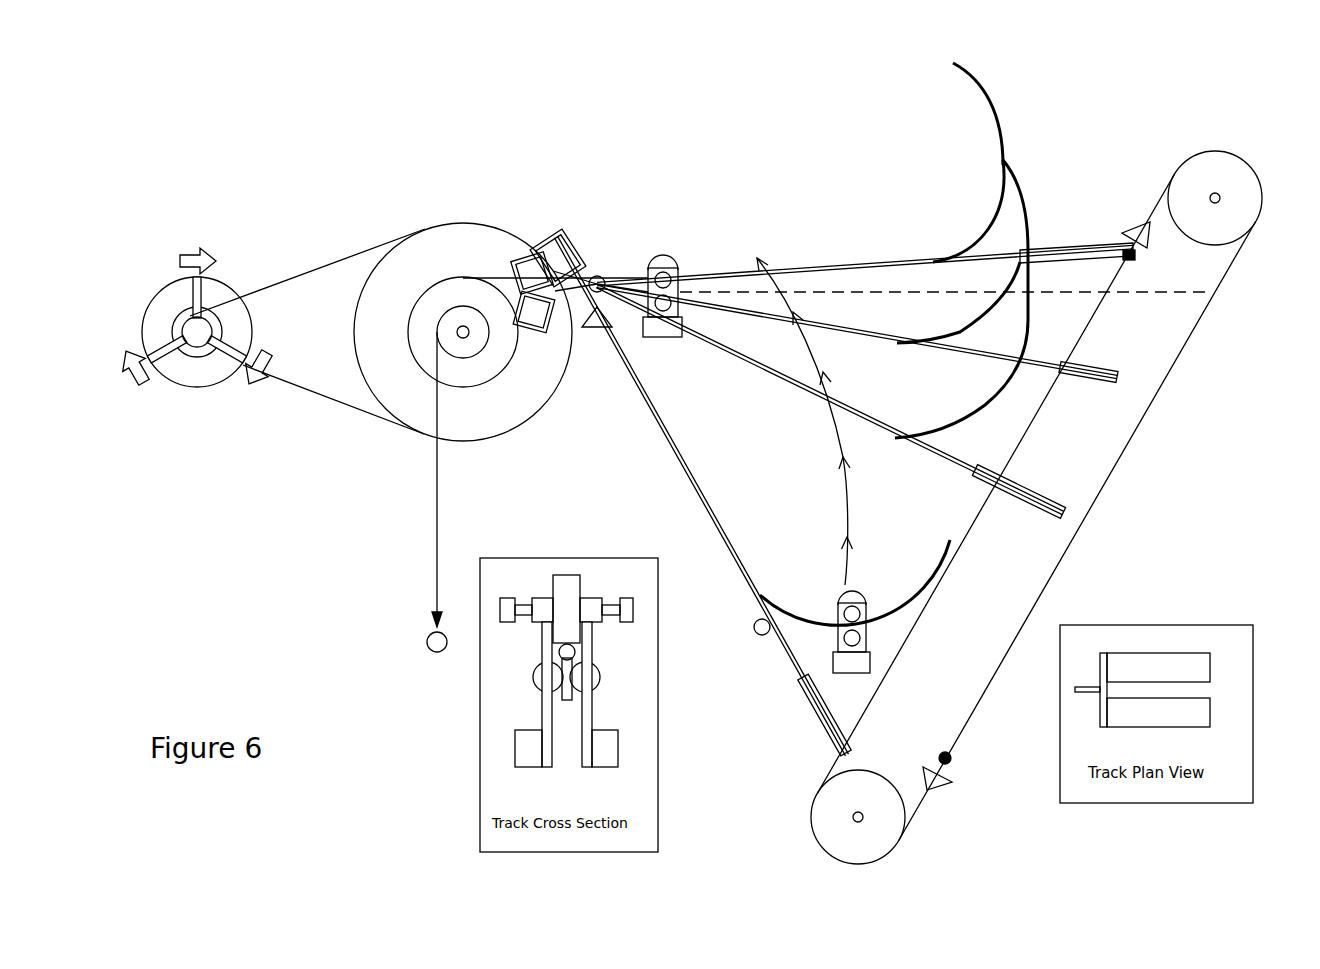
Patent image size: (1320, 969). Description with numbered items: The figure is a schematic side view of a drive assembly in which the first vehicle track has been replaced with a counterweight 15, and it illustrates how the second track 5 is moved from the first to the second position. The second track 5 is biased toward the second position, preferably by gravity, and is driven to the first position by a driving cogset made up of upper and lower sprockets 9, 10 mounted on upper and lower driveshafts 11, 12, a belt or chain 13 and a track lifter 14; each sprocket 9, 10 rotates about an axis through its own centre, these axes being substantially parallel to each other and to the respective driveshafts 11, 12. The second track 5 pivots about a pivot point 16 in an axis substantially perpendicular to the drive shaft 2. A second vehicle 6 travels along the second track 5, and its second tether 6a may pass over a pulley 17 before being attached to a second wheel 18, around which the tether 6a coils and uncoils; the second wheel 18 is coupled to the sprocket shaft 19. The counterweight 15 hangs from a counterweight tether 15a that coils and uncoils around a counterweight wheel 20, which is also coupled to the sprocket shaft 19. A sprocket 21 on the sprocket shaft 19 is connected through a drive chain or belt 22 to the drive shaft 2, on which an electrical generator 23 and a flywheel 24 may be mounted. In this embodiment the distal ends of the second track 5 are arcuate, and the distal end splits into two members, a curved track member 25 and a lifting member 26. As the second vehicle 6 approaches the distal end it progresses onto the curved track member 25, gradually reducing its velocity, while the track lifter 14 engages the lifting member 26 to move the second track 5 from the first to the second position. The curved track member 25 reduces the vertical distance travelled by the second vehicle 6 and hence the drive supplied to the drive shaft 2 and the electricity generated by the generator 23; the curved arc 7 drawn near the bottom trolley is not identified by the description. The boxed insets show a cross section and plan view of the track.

The drive shaft 2 is at (190, 325).
The second track 5 is at (705, 500).
The second vehicle 6 is at (668, 258).
The second tether 6a is at (617, 272).
The curved track section 7 is at (755, 633).
The upper sprocket 9 is at (813, 830).
The lower sprocket 10 is at (1203, 151).
The upper driveshaft 11 is at (864, 821).
The lower driveshaft 12 is at (1218, 193).
The belt or chain 13 is at (1168, 383).
The track lifter 14 is at (1135, 261).
The counterweight 15 is at (432, 651).
The counterweight tether 15a is at (437, 582).
The pivot point 16 is at (590, 328).
The pulley 17 is at (597, 276).
The second wheel 18 is at (512, 358).
The sprocket shaft 19 is at (461, 338).
The counterweight wheel 20 is at (480, 352).
The sprocket 21 is at (460, 222).
The drive chain or belt 22 is at (318, 268).
The electrical generator 23 is at (173, 308).
The flywheel 24 is at (223, 282).
The curved track member 25 is at (1008, 143).
The lifting member 26 is at (1074, 248).